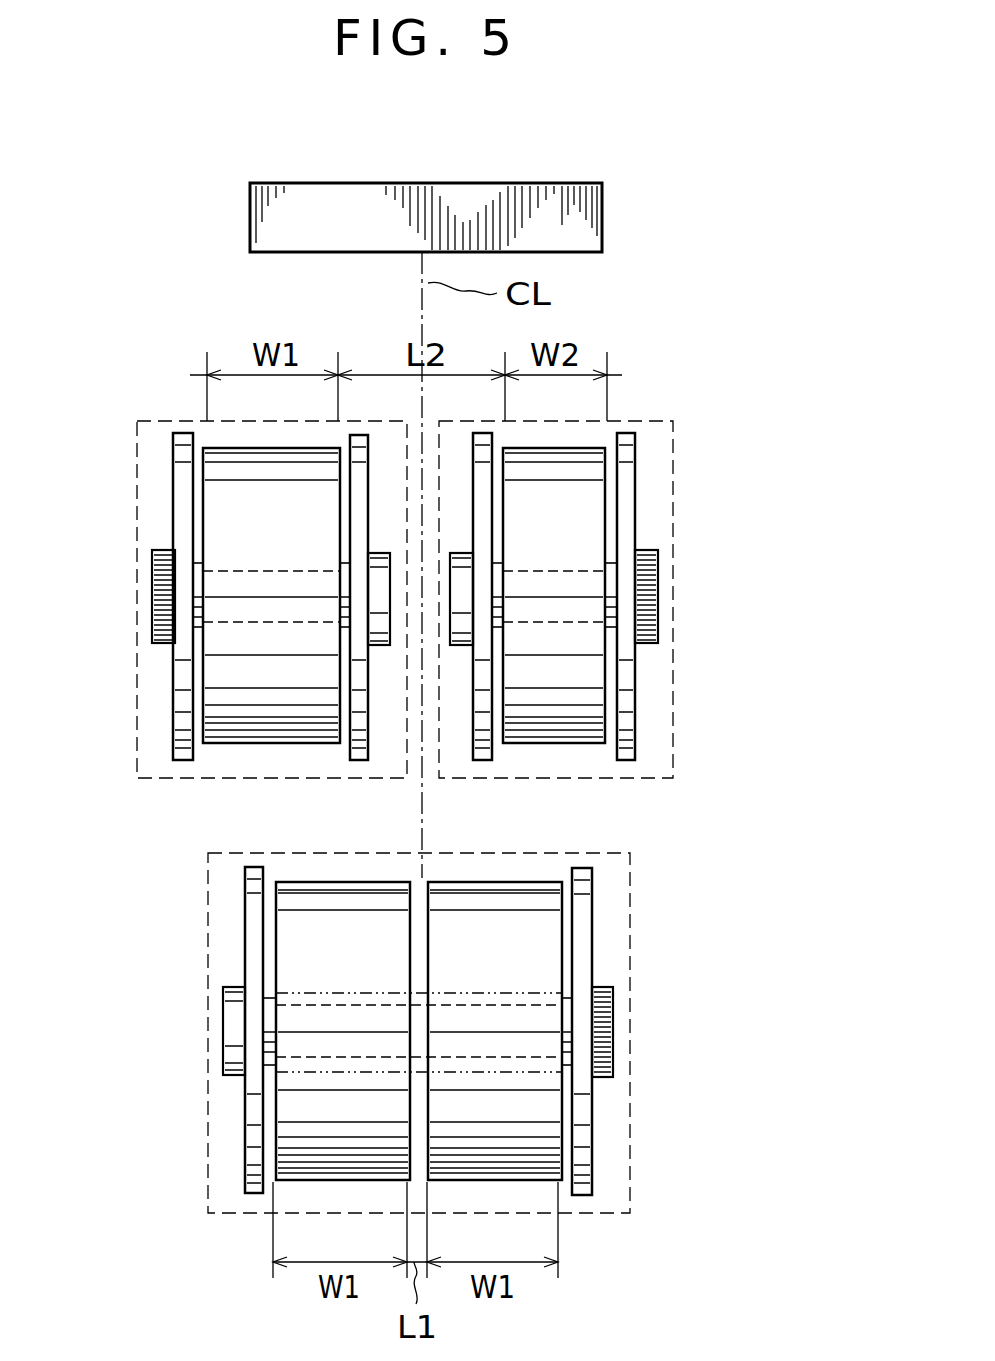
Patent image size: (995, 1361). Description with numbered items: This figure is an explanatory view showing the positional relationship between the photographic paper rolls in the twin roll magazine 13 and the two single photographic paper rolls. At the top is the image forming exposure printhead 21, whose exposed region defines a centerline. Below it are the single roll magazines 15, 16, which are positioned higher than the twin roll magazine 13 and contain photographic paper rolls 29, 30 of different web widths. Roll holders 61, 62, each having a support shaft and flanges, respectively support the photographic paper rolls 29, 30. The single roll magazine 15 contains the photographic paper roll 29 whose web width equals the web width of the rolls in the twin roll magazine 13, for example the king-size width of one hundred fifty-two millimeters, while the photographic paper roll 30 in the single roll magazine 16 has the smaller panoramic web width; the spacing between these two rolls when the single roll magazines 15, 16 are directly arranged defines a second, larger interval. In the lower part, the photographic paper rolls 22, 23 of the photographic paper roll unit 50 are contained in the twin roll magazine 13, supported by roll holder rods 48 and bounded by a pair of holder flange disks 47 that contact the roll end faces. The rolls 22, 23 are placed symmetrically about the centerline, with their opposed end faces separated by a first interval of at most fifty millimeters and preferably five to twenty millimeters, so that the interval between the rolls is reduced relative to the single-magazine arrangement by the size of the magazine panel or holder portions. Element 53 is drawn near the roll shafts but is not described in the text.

The twin roll magazine 13 is at (208, 1132).
The single roll magazine 15 is at (137, 754).
The single roll magazine 16 is at (673, 755).
The image forming exposure printhead 21 is at (604, 228).
The photographic paper roll 22 is at (288, 935).
The photographic paper roll 23 is at (548, 935).
The photographic paper roll 29 is at (215, 680).
The photographic paper roll 30 is at (585, 503).
The holder flange disk 47 is at (580, 1115).
The roll holder rod 48 is at (580, 1030).
The photographic paper roll unit 50 is at (611, 1177).
The roller shaft 53 is at (416, 1073).
The roll holder 61 is at (173, 513).
The roll holder 62 is at (628, 683).